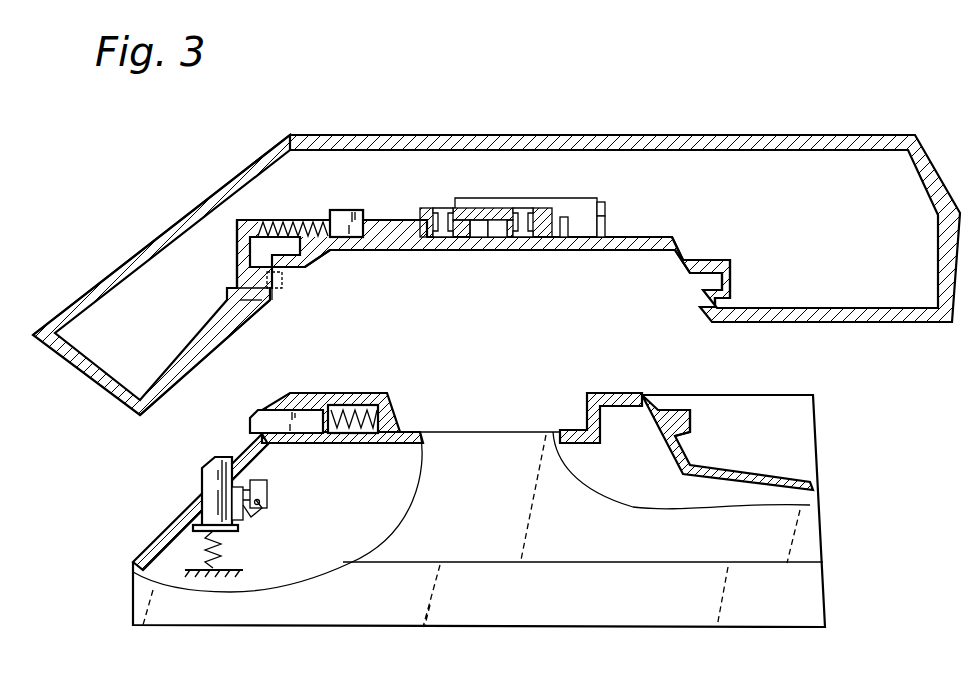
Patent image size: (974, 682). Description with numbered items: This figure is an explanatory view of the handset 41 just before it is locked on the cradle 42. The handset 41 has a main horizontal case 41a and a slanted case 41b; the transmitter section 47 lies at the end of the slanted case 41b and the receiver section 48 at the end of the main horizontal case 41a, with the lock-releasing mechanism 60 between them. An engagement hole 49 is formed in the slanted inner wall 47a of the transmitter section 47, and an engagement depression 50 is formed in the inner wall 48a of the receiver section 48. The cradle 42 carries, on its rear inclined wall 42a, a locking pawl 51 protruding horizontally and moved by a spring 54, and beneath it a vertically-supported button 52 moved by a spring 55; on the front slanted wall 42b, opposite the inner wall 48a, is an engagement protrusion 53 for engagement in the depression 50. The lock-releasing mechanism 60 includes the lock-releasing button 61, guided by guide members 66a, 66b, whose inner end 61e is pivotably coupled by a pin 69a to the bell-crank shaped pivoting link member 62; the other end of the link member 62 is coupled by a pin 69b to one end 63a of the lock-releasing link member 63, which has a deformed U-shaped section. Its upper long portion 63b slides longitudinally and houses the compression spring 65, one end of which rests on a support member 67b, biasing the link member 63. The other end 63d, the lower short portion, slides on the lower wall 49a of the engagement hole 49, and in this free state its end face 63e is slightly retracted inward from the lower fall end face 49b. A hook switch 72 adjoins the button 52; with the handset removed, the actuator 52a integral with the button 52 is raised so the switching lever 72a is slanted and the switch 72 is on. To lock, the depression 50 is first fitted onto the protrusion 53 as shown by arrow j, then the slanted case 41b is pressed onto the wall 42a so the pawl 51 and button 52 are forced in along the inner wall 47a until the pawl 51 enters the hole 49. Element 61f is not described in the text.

The handset 41 is at (474, 130).
The main horizontal case 41a is at (637, 130).
The slanted case 41b is at (160, 227).
The cradle 42 is at (498, 629).
The inclined wall 42a is at (158, 533).
The slanted wall 42b is at (690, 455).
The transmitter section 47 is at (205, 370).
The inner wall 47a is at (231, 333).
The receiver section 48 is at (868, 330).
The inner wall 48a is at (668, 253).
The engagement hole 49 is at (312, 273).
The lower wall 49a is at (262, 305).
The lower fall end face 49b is at (277, 297).
The engagement depression 50 is at (681, 279).
The locking pawl 51 is at (250, 424).
The vertically-supported button 52 is at (202, 473).
The actuator 52a is at (264, 494).
The engagement protrusion 53 is at (672, 409).
The spring 54 is at (355, 406).
The spring 55 is at (224, 553).
The lock-releasing mechanism 60 is at (442, 203).
The lock-releasing button 61 is at (549, 193).
The inner end 61e is at (566, 216).
The block 61f is at (500, 237).
The pivoting link member 62 is at (420, 204).
The lock-releasing link member 63 is at (413, 190).
The one end 63a is at (478, 237).
The upper long portion 63b is at (403, 246).
The other end 63d is at (258, 266).
The end face 63e is at (282, 283).
The compression spring 65 is at (277, 218).
The guide member 66a is at (607, 218).
The guide member 66b is at (601, 203).
The support member 67b is at (343, 209).
The pin 69a is at (521, 208).
The pin 69b is at (451, 208).
The hook switch 72 is at (267, 483).
The switching lever 72a is at (244, 517).
The arrow j is at (690, 278).